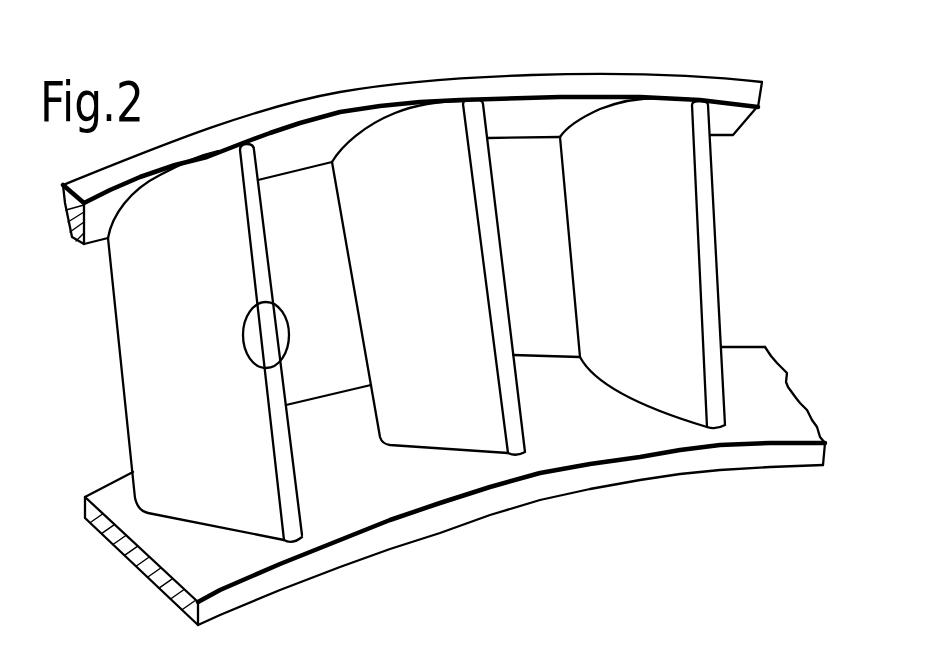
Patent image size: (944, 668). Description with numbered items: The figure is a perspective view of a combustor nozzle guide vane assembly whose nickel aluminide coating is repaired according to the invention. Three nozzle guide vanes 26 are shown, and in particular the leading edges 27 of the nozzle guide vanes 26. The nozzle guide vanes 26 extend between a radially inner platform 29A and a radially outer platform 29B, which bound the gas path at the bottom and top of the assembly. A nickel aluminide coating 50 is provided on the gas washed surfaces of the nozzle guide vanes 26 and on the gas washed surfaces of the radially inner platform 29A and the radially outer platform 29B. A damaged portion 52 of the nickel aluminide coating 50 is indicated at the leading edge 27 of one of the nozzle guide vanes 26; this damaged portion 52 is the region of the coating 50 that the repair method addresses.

The nozzle guide vane 26 is at (220, 283).
The leading edge 27 is at (257, 248).
The radially inner platform 29A is at (760, 413).
The radially outer platform 29B is at (730, 114).
The nickel aluminide coating 50 is at (553, 113).
The damaged portion 52 is at (238, 344).